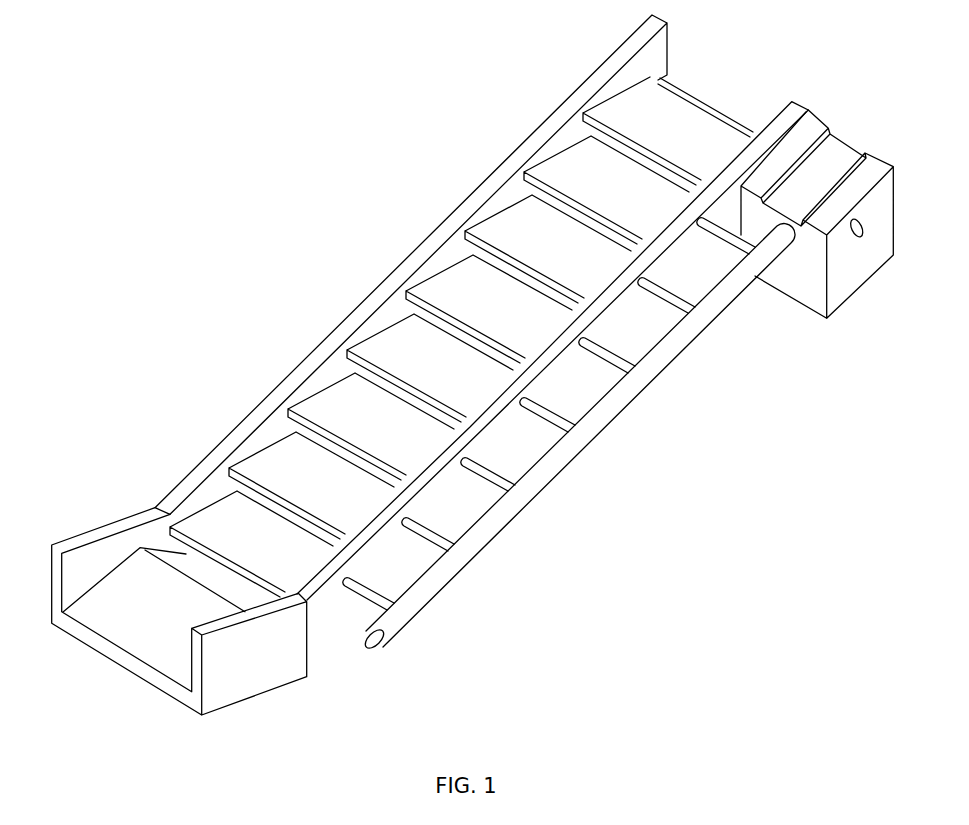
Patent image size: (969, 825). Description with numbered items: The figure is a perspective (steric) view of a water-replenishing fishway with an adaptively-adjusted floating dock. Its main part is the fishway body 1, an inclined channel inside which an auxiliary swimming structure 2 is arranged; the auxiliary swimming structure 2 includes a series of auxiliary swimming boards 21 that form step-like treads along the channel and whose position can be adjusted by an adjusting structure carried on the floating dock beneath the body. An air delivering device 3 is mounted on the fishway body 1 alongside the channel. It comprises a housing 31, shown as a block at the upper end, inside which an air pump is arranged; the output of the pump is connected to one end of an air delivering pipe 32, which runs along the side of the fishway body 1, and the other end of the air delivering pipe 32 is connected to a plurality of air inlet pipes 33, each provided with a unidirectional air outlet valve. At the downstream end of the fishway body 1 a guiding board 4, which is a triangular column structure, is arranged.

The fishway body 1 is at (333, 380).
The auxiliary swimming structure 2 is at (612, 120).
The auxiliary swimming board 21 is at (493, 238).
The air delivering device 3 is at (618, 380).
The housing 31 is at (812, 287).
The air delivering pipe 32 is at (665, 352).
The air inlet pipe 33 is at (453, 537).
The guiding board 4 is at (167, 615).